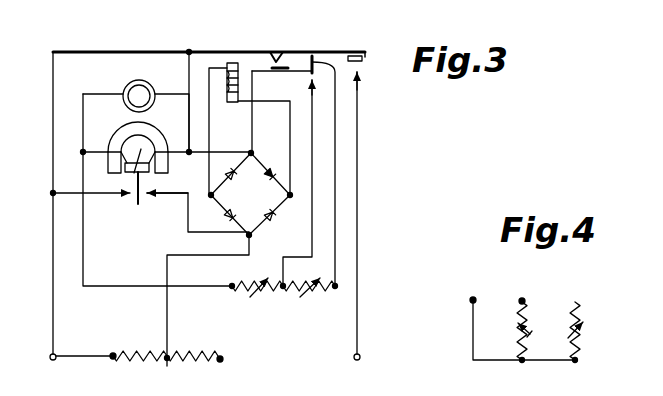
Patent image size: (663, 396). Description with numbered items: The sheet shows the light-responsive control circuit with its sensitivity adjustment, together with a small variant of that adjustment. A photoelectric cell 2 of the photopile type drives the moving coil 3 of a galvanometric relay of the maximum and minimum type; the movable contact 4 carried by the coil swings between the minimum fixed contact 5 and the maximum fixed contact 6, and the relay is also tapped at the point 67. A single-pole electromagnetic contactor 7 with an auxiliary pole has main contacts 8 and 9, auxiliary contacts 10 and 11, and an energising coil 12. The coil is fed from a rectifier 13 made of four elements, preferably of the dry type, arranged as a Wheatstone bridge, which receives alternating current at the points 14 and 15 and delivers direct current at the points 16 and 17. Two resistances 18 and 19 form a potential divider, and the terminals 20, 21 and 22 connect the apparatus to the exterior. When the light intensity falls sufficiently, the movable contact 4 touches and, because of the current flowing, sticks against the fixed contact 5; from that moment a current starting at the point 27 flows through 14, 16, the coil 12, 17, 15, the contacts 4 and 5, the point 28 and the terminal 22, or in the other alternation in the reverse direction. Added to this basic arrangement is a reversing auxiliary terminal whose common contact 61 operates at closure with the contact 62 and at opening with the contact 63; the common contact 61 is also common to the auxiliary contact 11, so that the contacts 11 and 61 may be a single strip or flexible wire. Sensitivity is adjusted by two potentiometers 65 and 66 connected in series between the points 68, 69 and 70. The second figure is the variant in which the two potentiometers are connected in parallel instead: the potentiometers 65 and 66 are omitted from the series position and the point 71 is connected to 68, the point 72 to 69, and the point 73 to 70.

In FIG. 3, the photoelectric cell 2 is at (144, 92).
In FIG. 3, the moving coil 3 is at (128, 168).
In FIG. 3, the movable contact 4 is at (138, 202).
In FIG. 3, the minimum fixed contact 5 is at (128, 196).
In FIG. 3, the maximum fixed contact 6 is at (147, 196).
In FIG. 3, the electromagnetic contactor 7 is at (300, 30).
In FIG. 3, the main contact 8 is at (366, 58).
In FIG. 3, the main contact 9 is at (360, 78).
In FIG. 3, the auxiliary contact 10 is at (277, 57).
In FIG. 3, the auxiliary contact 11 is at (268, 64).
In FIG. 3, the energising coil 12 is at (233, 102).
In FIG. 3, the rectifier 13 is at (251, 194).
In FIG. 3, the A. C. supply point 14 is at (252, 236).
In FIG. 3, the A. C. supply point 15 is at (253, 154).
In FIG. 3, the D. C. output point 16 is at (207, 219).
In FIG. 3, the D. C. output point 17 is at (295, 215).
In FIG. 3, the resistance 18 is at (190, 351).
In FIG. 3, the resistance 19 is at (138, 351).
In FIG. 3, the terminal 20 is at (361, 356).
In FIG. 3, the terminal 21 is at (220, 362).
In FIG. 3, the terminal 22 is at (55, 362).
In FIG. 3, the circuit point 27 is at (168, 361).
In FIG. 3, the circuit point 28 is at (52, 197).
In FIG. 3, the common contact 61 is at (317, 70).
In FIG. 3, the contact 62 is at (315, 86).
In FIG. 3, the contact 63 is at (316, 57).
In FIG. 3, the potentiometer 65 is at (251, 298).
In FIG. 4, the potentiometer 65 is at (539, 332).
In FIG. 3, the potentiometer 66 is at (303, 298).
In FIG. 4, the potentiometer 66 is at (584, 333).
In FIG. 3, the circuit point 67 is at (86, 150).
In FIG. 3, the connection point 68 is at (232, 290).
In FIG. 3, the connection point 69 is at (283, 292).
In FIG. 3, the connection point 70 is at (339, 282).
In FIG. 4, the connection point 71 is at (477, 300).
In FIG. 4, the connection point 72 is at (524, 300).
In FIG. 4, the connection point 73 is at (578, 303).